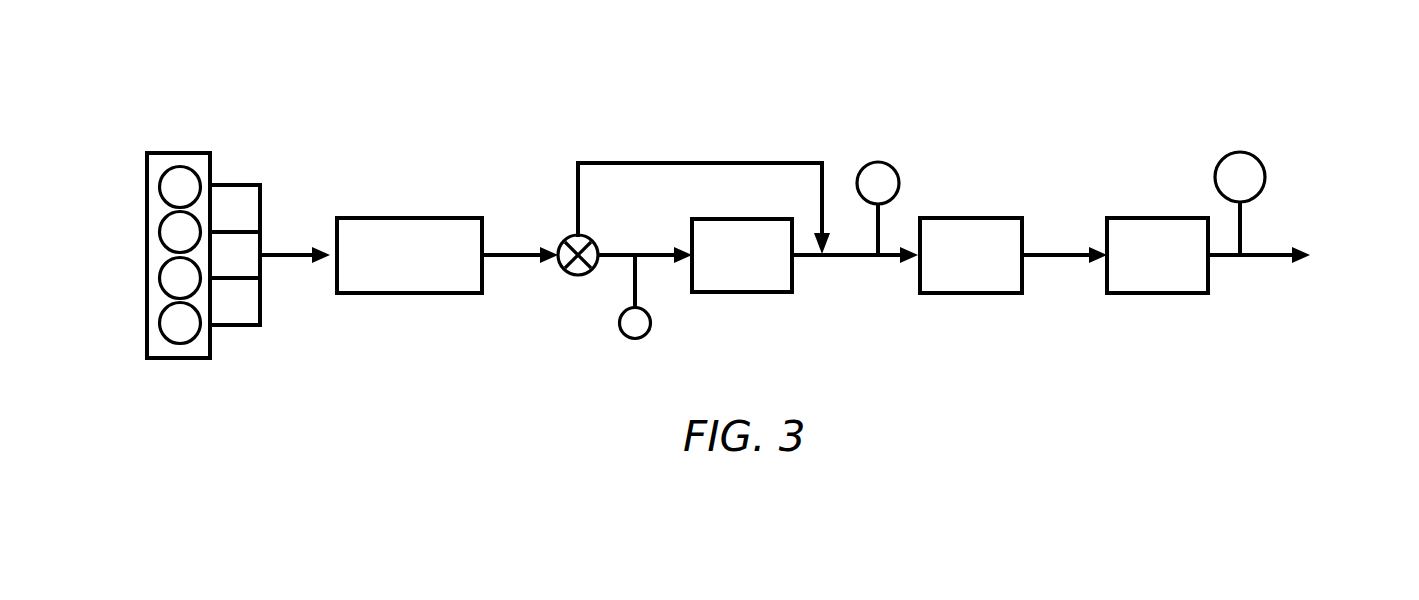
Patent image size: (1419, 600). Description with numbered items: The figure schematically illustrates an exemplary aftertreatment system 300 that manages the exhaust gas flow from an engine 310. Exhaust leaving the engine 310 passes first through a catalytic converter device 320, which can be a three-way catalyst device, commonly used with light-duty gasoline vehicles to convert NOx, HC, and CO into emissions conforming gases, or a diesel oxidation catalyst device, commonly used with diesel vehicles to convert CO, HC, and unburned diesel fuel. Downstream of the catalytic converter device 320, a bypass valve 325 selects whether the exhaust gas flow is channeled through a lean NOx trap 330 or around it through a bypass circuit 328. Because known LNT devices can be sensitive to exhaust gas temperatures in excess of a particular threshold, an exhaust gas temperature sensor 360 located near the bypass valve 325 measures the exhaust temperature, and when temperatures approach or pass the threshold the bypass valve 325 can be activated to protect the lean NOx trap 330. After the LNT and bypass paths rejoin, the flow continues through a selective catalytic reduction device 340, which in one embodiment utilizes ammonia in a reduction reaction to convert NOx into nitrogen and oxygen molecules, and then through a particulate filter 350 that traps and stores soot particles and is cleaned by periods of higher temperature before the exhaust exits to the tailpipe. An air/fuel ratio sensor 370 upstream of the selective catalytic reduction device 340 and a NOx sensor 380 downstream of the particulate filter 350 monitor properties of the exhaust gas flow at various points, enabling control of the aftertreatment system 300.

The aftertreatment system 300 is at (316, 100).
The engine 310 is at (200, 167).
The catalytic converter device 320 is at (401, 228).
The bypass valve 325 is at (564, 248).
The bypass circuit 328 is at (676, 163).
The lean NOx trap 330 is at (784, 278).
The selective catalytic reduction device 340 is at (995, 228).
The particulate filter 350 is at (1145, 228).
The exhaust gas temperature sensor 360 is at (619, 324).
The air/fuel ratio sensor 370 is at (898, 177).
The NOx sensor 380 is at (1262, 170).